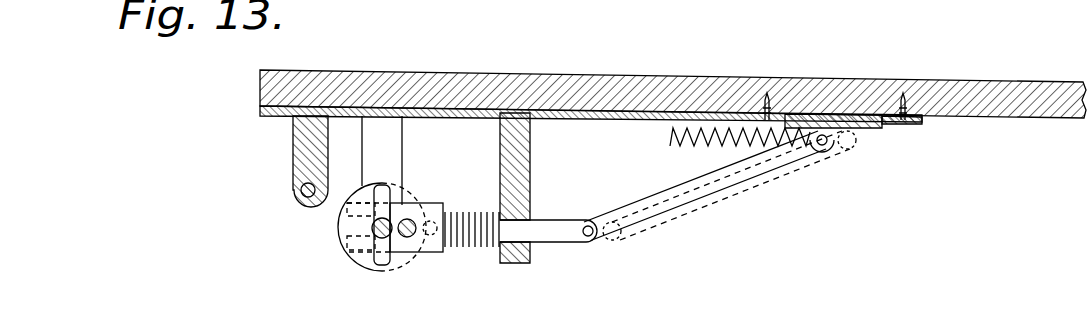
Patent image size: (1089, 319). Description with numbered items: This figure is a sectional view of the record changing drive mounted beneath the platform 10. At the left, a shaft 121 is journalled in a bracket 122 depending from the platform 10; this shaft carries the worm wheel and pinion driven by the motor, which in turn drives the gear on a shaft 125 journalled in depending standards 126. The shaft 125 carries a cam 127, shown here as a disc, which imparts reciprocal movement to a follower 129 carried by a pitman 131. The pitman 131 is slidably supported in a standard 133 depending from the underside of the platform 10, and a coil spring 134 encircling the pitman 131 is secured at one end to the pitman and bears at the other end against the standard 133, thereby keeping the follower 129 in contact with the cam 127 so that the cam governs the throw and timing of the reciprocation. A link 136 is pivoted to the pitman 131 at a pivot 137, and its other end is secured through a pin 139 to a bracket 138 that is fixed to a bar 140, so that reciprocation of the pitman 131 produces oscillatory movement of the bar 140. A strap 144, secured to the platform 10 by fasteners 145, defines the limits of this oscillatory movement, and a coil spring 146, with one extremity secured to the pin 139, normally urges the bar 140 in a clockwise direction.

The platform 10 is at (518, 72).
The shaft 121 is at (305, 200).
The bracket 122 is at (303, 165).
The shaft 125 is at (390, 240).
The depending standards 126 is at (408, 162).
The cam 127 is at (343, 232).
The cam follower 129 is at (412, 222).
The pitman 131 is at (552, 243).
The standards 133 is at (530, 190).
The coil spring 134 is at (485, 246).
The link 136 is at (680, 190).
The pivot 137 is at (592, 220).
The bracket 138 is at (834, 146).
The pin 139 is at (848, 150).
The bar 140 is at (862, 118).
The strap 144 is at (787, 118).
The fasteners 145 is at (768, 92).
The coil spring 146 is at (670, 146).